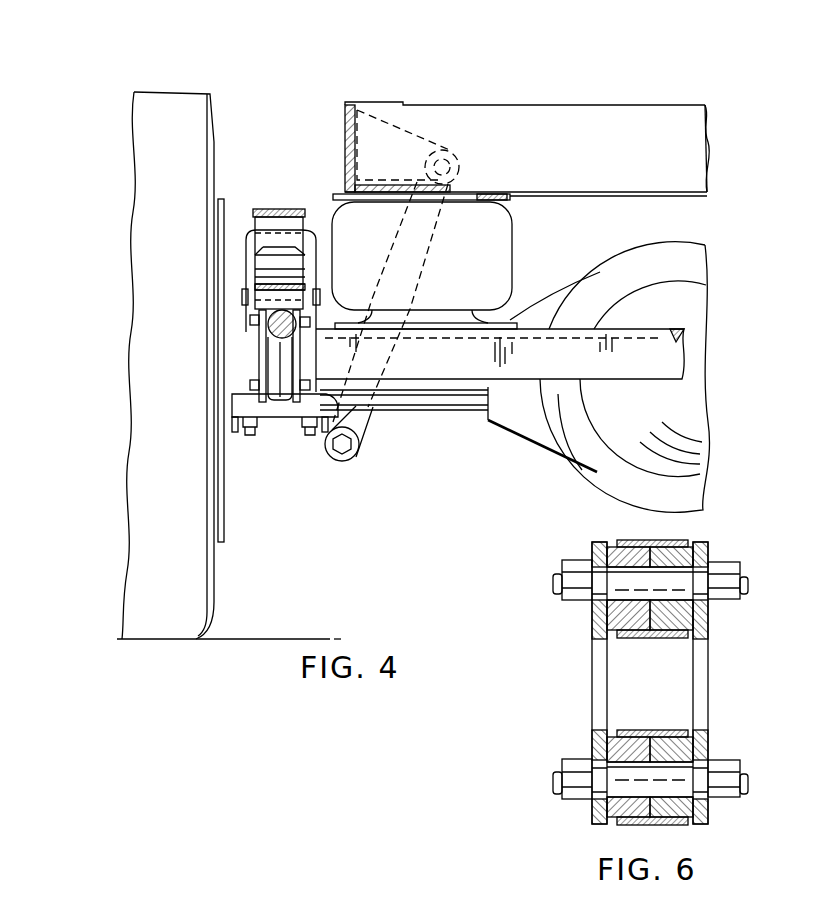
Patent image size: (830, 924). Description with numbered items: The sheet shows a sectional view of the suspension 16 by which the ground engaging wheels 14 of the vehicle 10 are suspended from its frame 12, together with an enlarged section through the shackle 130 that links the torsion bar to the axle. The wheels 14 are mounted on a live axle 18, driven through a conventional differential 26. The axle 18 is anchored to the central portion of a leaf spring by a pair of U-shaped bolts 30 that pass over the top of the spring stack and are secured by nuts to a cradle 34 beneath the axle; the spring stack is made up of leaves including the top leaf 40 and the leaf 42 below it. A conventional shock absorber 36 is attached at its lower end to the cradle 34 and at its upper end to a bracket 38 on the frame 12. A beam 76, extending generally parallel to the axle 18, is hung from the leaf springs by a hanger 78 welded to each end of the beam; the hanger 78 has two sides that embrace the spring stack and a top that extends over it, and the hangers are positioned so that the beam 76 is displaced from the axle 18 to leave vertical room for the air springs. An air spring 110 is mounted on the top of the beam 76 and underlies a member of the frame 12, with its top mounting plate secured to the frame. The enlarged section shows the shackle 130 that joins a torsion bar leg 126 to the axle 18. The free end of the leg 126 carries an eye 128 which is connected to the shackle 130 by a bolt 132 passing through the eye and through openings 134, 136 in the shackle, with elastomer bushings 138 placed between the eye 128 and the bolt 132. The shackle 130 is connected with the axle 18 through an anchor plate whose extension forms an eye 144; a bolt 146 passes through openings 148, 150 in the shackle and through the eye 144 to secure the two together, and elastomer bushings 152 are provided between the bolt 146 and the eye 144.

In FIG. 4, the vehicle 10 is at (718, 126).
In FIG. 4, the frame 12 is at (636, 102).
In FIG. 4, the ground engaging wheels 14 is at (204, 598).
In FIG. 4, the suspension 16 is at (416, 452).
In FIG. 4, the axle 18 is at (458, 402).
In FIG. 4, the differential 26 is at (700, 268).
In FIG. 4, the U-shaped bolts 30 is at (253, 430).
In FIG. 4, the cradle 34 is at (295, 433).
In FIG. 4, the shock absorber 36 is at (366, 421).
In FIG. 4, the bracket 38 is at (405, 128).
In FIG. 4, the top leaf 40 is at (280, 207).
In FIG. 4, the leaf 42 is at (263, 267).
In FIG. 4, the beam 76 is at (530, 355).
In FIG. 4, the hanger 78 is at (241, 295).
In FIG. 4, the air spring 110 is at (515, 256).
In FIG. 4, the legs 126 is at (268, 366).
In FIG. 6, the eye 128 is at (643, 730).
In FIG. 4, the shackle 130 is at (262, 351).
In FIG. 6, the shackle 130 is at (710, 663).
In FIG. 6, the bolt 132 is at (747, 772).
In FIG. 6, the opening 134 is at (602, 800).
In FIG. 6, the opening 136 is at (703, 777).
In FIG. 6, the elastomer bushings 138 is at (687, 747).
In FIG. 6, the eye 144 is at (653, 634).
In FIG. 6, the bolt 146 is at (748, 583).
In FIG. 6, the opening 148 is at (596, 553).
In FIG. 6, the opening 150 is at (708, 553).
In FIG. 6, the elastomer bushings 152 is at (613, 613).